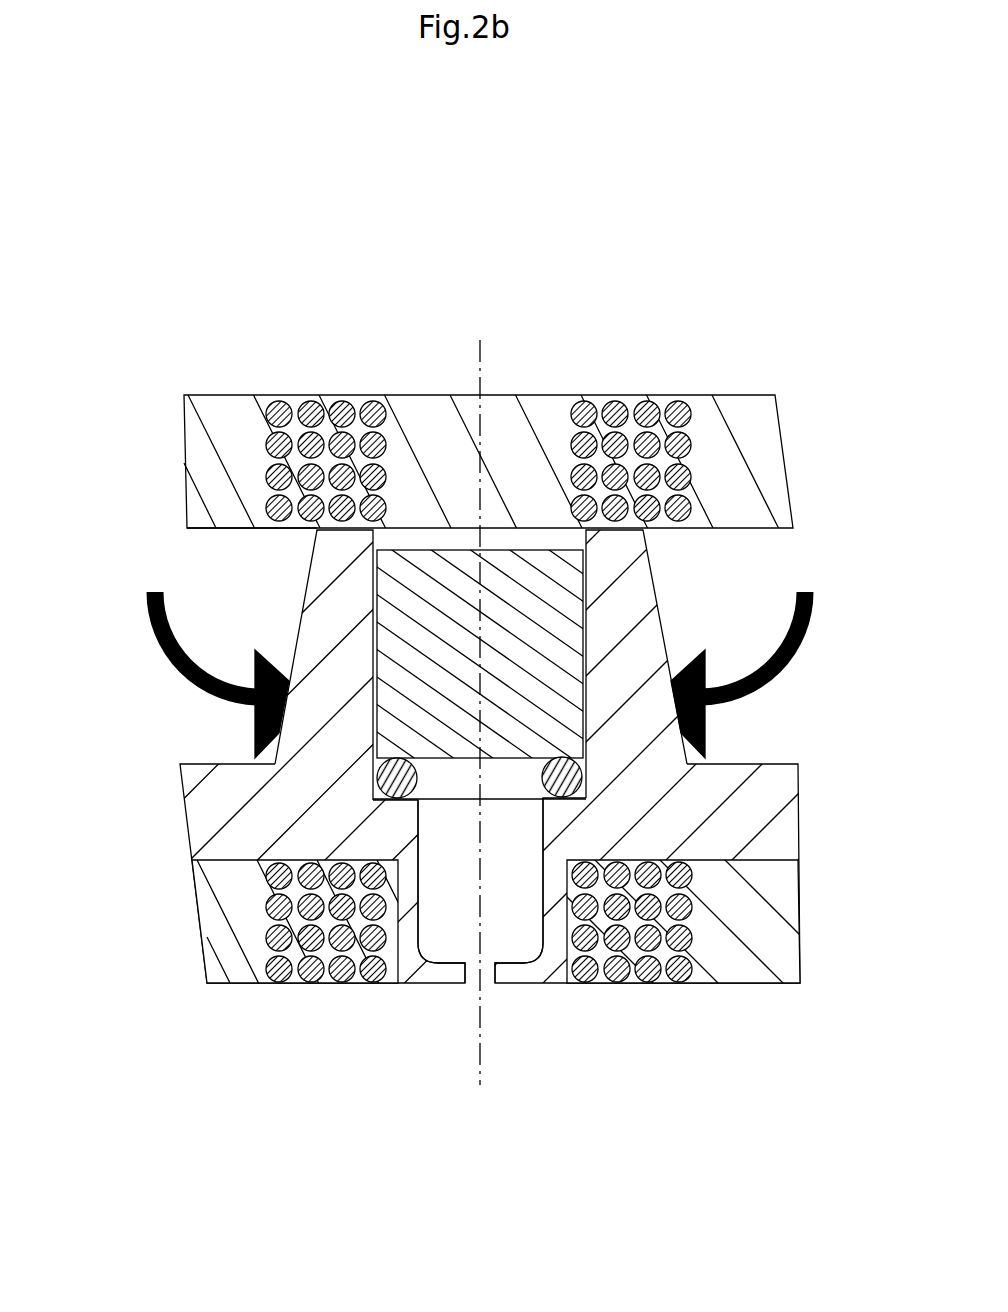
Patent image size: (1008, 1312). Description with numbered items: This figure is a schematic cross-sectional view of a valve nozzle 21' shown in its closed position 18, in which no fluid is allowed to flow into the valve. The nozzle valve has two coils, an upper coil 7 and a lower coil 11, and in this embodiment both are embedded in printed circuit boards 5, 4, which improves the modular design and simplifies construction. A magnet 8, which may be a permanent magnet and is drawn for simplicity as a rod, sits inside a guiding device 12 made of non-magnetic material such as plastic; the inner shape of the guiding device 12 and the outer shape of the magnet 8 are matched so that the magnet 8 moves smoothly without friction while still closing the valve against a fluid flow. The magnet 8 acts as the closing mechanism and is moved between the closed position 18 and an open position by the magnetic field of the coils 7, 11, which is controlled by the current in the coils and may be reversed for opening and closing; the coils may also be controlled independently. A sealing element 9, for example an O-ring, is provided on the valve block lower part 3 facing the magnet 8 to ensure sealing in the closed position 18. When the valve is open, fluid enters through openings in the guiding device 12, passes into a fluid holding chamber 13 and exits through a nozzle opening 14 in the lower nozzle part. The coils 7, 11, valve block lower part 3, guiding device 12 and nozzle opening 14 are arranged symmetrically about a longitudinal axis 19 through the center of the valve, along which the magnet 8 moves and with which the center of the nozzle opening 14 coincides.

The valve block lower part 3 is at (717, 840).
The printed circuit board 4 is at (238, 985).
The printed circuit board 5 is at (738, 412).
The upper coil 7 is at (647, 408).
The magnet 8 is at (568, 573).
The sealing element 9 is at (392, 780).
The lower coil 11 is at (618, 938).
The guiding device 12 is at (330, 603).
The fluid holding chamber 13 is at (513, 938).
The nozzle opening 14 is at (465, 972).
The closed position 18 is at (195, 686).
The longitudinal axis 19 is at (476, 385).
The valve nozzle 21' is at (204, 393).